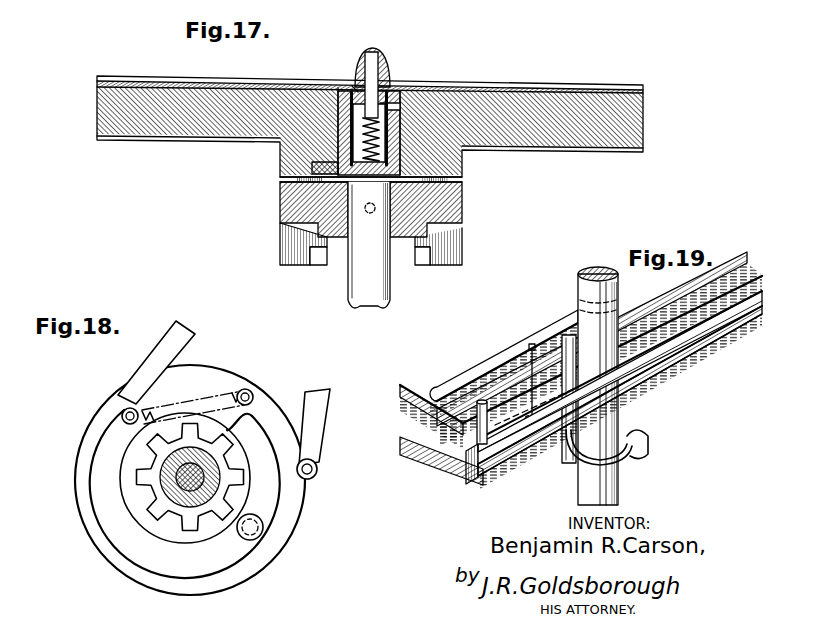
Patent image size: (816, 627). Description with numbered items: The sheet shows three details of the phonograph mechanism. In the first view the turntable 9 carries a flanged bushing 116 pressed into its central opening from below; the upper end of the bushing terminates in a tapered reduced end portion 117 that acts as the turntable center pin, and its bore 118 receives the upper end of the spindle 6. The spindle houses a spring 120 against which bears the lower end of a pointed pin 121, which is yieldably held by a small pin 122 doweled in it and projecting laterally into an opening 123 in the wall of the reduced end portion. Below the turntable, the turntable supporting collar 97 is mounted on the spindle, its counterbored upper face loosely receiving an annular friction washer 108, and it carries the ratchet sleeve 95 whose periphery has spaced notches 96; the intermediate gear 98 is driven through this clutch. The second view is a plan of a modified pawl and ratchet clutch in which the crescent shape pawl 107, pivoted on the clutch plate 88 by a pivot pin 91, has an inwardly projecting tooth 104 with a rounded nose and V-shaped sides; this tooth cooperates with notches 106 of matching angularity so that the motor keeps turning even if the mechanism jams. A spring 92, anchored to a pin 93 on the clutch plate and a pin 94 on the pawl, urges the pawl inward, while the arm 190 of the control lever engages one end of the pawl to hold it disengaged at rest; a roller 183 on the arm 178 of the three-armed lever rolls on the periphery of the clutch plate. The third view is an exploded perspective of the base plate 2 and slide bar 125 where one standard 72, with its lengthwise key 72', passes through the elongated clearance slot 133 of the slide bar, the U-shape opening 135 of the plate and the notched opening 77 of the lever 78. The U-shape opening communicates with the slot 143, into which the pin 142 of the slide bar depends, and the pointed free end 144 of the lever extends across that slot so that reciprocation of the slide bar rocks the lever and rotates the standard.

In FIG. 17, the turntable 9 is at (573, 102).
In FIG. 17, the flanged bushing 116 is at (413, 93).
In FIG. 17, the bore 118 is at (402, 92).
In FIG. 17, the small pin 122 is at (393, 78).
In FIG. 17, the reduced end portion 117 is at (367, 73).
In FIG. 17, the pointed pin 121 is at (375, 50).
In FIG. 17, the opening 123 is at (357, 84).
In FIG. 17, the spring 120 is at (368, 132).
In FIG. 17, the annular friction washer 108 is at (462, 178).
In FIG. 17, the turntable supporting collar 97 is at (460, 203).
In FIG. 18, the turntable supporting collar 97 is at (158, 456).
In FIG. 17, the ratchet sleeve 95 is at (460, 238).
In FIG. 17, the notches 96 is at (283, 255).
In FIG. 17, the turntable spindle 6 is at (357, 277).
In FIG. 18, the turntable spindle 6 is at (200, 478).
In FIG. 17, the intermediate gear 98 is at (370, 214).
In FIG. 18, the clutch plate 88 is at (272, 401).
In FIG. 18, the inwardly projecting tooth 104 is at (157, 528).
In FIG. 18, the crescent shape pawl 107 is at (268, 507).
In FIG. 18, the notches 106 is at (150, 461).
In FIG. 18, the arm 190 is at (172, 347).
In FIG. 18, the spring 92 is at (201, 398).
In FIG. 18, the pin 94 is at (124, 412).
In FIG. 18, the pin 93 is at (250, 390).
In FIG. 18, the arm 178 is at (330, 402).
In FIG. 18, the roller 183 is at (317, 466).
In FIG. 18, the pivot pin 91 is at (255, 540).
In FIG. 19, the slot 143 is at (704, 313).
In FIG. 19, the elongated clearance slot 133 is at (492, 356).
In FIG. 19, the standard 72 is at (579, 389).
In FIG. 19, the key or spline 72' is at (619, 279).
In FIG. 19, the notched or splined opening 77 is at (567, 450).
In FIG. 19, the U-shape opening 135 is at (643, 363).
In FIG. 19, the pin 142 is at (470, 462).
In FIG. 19, the slide bar 125 is at (418, 404).
In FIG. 19, the base plate 2 is at (433, 447).
In FIG. 19, the lever 78 is at (638, 428).
In FIG. 19, the pointed free end 144 is at (645, 454).